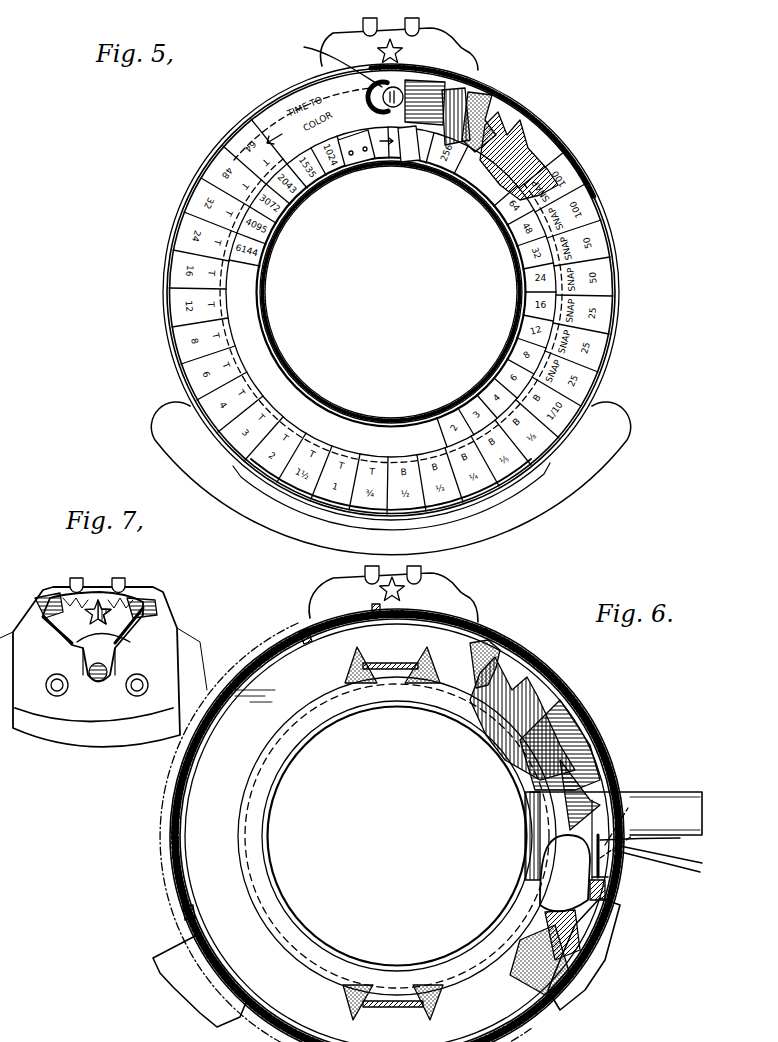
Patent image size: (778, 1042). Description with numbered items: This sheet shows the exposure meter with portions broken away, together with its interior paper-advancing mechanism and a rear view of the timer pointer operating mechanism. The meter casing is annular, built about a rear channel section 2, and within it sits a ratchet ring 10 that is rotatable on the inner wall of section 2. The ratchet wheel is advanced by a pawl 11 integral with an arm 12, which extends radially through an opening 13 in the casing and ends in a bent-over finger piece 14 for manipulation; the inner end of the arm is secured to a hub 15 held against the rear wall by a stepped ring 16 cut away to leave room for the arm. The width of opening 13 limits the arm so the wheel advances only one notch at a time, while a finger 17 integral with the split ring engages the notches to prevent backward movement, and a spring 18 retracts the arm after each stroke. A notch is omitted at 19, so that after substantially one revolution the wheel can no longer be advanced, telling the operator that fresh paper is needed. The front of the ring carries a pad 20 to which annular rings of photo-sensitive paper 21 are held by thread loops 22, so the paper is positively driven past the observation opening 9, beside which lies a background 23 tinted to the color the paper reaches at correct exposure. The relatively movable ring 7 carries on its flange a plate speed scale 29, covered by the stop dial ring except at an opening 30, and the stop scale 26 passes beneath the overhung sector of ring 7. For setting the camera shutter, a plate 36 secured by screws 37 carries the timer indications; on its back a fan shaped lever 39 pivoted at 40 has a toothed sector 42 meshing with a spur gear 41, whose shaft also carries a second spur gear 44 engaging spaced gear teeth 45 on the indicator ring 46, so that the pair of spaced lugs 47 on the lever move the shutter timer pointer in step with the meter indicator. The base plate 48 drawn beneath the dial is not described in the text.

In FIG. 7, the rear channel section 2 is at (102, 712).
In FIG. 5, the relatively movable ring 7 is at (320, 402).
In FIG. 5, the observation opening 9 is at (334, 61).
In FIG. 5, the ratchet ring 10 is at (465, 165).
In FIG. 6, the ratchet ring 10 is at (475, 712).
In FIG. 6, the pawl 11 is at (615, 876).
In FIG. 6, the arm 12 is at (620, 812).
In FIG. 6, the opening 13 is at (640, 855).
In FIG. 6, the finger piece 14 is at (680, 792).
In FIG. 6, the hub 15 is at (530, 870).
In FIG. 6, the stepped ring 16 is at (520, 748).
In FIG. 6, the finger 17 is at (590, 803).
In FIG. 6, the spring 18 is at (650, 866).
In FIG. 6, the omitted notch portion 19 is at (603, 893).
In FIG. 5, the pad 20 is at (495, 130).
In FIG. 6, the pad 20 is at (425, 675).
In FIG. 5, the photo-sensitive paper 21 is at (462, 108).
In FIG. 6, the photo-sensitive paper 21 is at (310, 692).
In FIG. 6, the thread loops 22 is at (385, 670).
In FIG. 5, the background 23 is at (372, 97).
In FIG. 5, the stop scale 26 is at (372, 162).
In FIG. 5, the plate speed scale 29 is at (283, 205).
In FIG. 5, the opening 30 is at (407, 158).
In FIG. 5, the plate 36 is at (456, 45).
In FIG. 7, the plate 36 is at (167, 630).
In FIG. 6, the plate 36 is at (320, 590).
In FIG. 7, the screws 37 is at (137, 675).
In FIG. 7, the fan shaped lever 39 is at (45, 640).
In FIG. 7, the pivot 40 is at (93, 672).
In FIG. 7, the spur gear 41 is at (87, 615).
In FIG. 7, the toothed sector 42 is at (109, 615).
In FIG. 5, the second spur gear 44 is at (392, 40).
In FIG. 6, the second spur gear 44 is at (392, 598).
In FIG. 6, the spaced gear teeth 45 is at (303, 638).
In FIG. 6, the ring 46 is at (518, 645).
In FIG. 5, the spaced lugs 47 is at (365, 20).
In FIG. 7, the spaced lugs 47 is at (117, 578).
In FIG. 6, the spaced lugs 47 is at (418, 578).
In FIG. 5, the base plate 48 is at (603, 473).